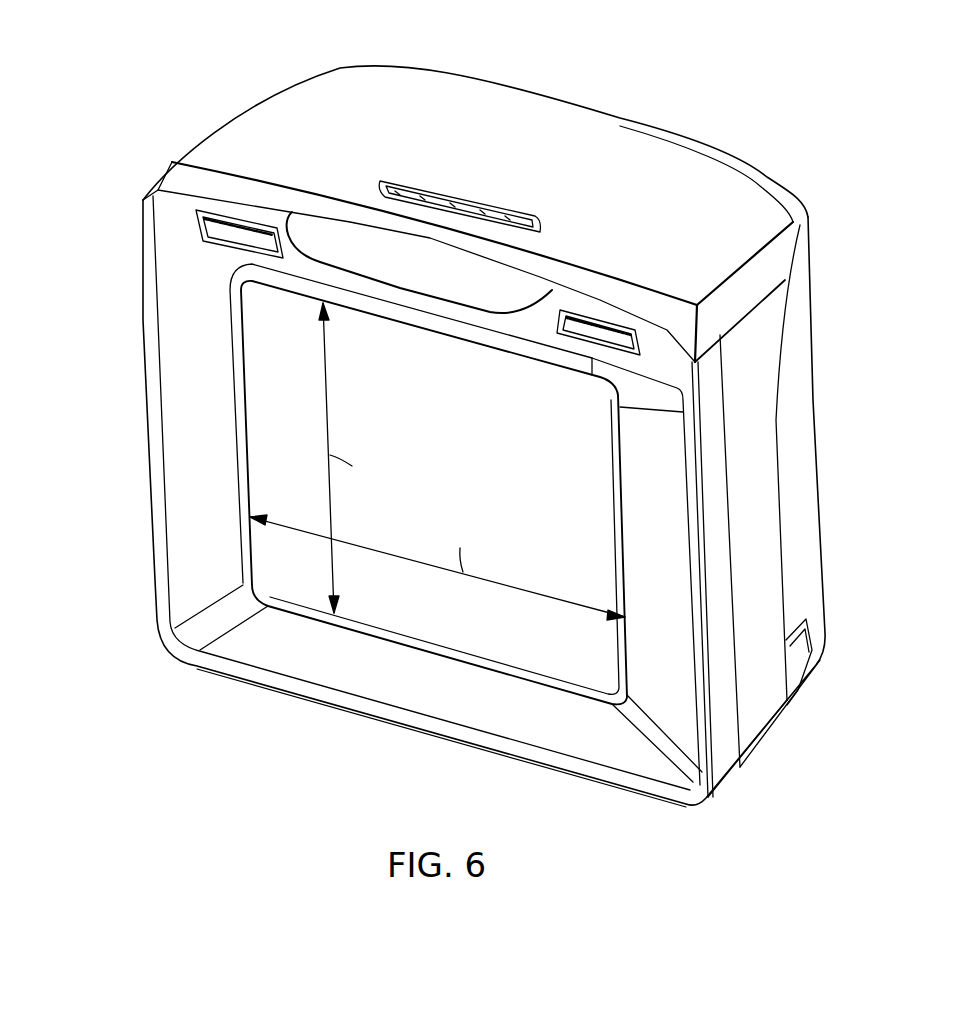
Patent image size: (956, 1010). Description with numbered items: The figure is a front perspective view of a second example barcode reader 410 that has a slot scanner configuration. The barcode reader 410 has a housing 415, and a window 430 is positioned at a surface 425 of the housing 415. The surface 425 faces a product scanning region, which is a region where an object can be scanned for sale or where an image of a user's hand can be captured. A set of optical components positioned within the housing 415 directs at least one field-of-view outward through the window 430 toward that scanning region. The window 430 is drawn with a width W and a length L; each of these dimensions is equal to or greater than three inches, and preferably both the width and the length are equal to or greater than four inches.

The barcode reader 410 is at (148, 46).
The housing 415 is at (766, 180).
The surface 425 is at (190, 328).
The window 430 is at (310, 427).